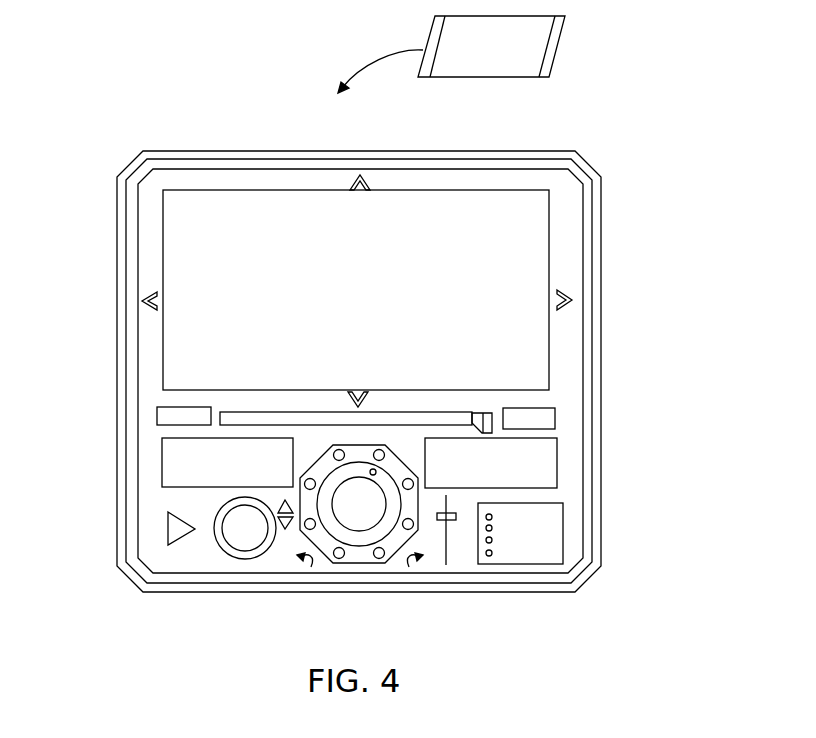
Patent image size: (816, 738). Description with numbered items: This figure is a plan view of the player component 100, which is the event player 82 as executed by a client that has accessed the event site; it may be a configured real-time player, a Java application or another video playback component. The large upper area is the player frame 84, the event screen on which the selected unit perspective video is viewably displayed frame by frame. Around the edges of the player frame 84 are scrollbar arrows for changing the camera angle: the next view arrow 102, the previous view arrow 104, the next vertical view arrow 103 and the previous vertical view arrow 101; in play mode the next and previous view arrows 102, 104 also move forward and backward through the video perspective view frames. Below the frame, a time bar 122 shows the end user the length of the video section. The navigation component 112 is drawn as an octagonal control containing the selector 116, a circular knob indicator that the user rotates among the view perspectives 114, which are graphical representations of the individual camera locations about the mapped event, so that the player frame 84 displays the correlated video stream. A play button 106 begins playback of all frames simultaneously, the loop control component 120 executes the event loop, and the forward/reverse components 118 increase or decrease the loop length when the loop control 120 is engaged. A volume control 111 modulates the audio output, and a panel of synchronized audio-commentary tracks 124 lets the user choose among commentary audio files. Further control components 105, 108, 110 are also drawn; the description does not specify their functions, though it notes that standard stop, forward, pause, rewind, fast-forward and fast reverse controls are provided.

The event player 82 is at (553, 65).
The player frame 84 is at (252, 190).
The player component 100 is at (515, 151).
The previous vertical view arrow 101 is at (372, 393).
The next view arrow 102 is at (569, 295).
The next vertical view arrow 103 is at (356, 177).
The previous view arrow 104 is at (140, 300).
The forward rotate button 105 is at (422, 560).
The play button 106 is at (168, 530).
The left display area 108 is at (162, 463).
The right display area 110 is at (557, 458).
The volume control 111 is at (448, 557).
The navigation component 112 is at (372, 563).
The view perspective indicator 114 is at (382, 451).
The selector 116 is at (371, 469).
The forward/reverse components 118 is at (283, 500).
The loop control component 120 is at (238, 552).
The time bar 122 is at (253, 411).
The synchronized audio-commentary tracks 124 is at (563, 535).